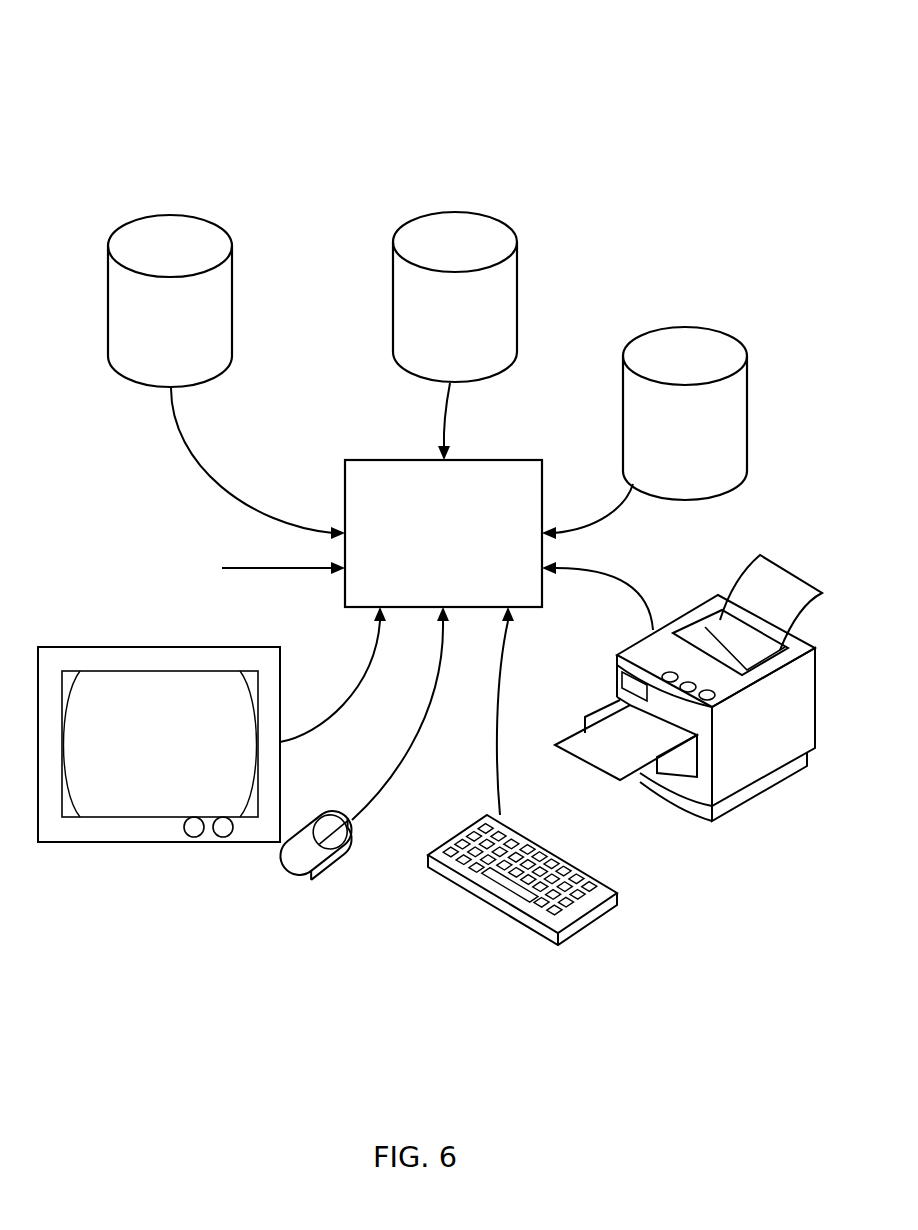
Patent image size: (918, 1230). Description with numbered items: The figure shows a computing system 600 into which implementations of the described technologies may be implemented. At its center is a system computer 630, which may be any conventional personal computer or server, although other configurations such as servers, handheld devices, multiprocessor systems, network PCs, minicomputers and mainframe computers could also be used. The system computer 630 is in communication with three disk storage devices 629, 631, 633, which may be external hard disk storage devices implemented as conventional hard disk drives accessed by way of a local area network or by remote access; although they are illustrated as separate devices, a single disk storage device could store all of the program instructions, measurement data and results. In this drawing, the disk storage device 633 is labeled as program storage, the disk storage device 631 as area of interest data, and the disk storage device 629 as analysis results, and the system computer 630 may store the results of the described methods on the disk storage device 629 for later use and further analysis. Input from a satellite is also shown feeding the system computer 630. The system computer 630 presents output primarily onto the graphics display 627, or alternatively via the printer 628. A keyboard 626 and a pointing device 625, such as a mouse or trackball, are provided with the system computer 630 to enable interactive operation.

The computing system 600 is at (133, 86).
The pointing device 625 is at (293, 890).
The keyboard 626 is at (583, 932).
The graphics display 627 is at (162, 842).
The printer 628 is at (727, 812).
The disk storage device 629 is at (685, 327).
The system computer 630 is at (475, 460).
The disk storage device 631 is at (500, 212).
The disk storage device 633 is at (207, 217).